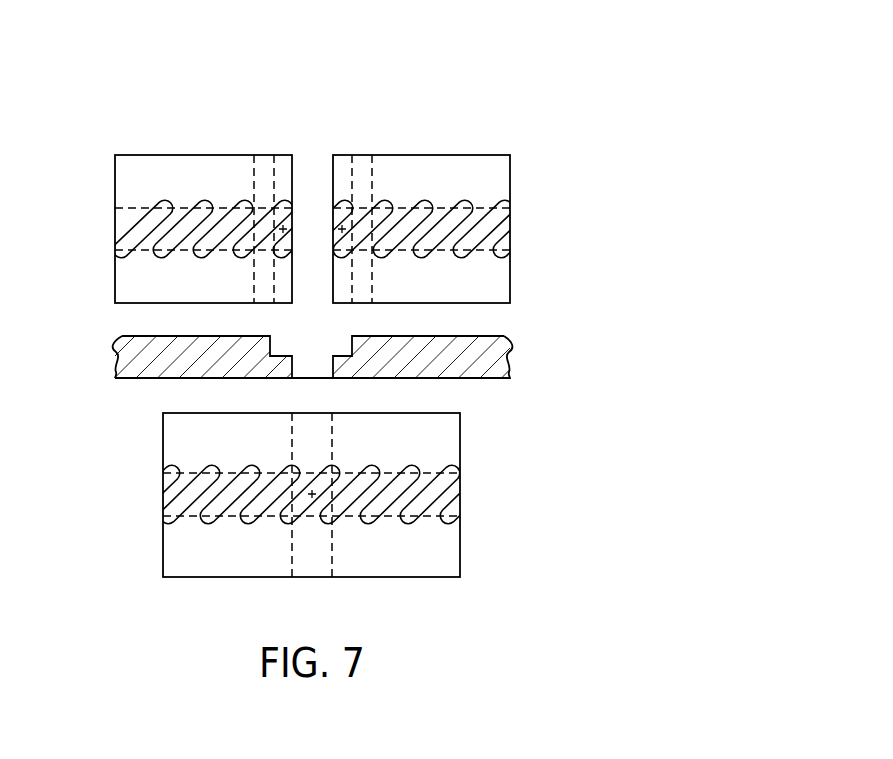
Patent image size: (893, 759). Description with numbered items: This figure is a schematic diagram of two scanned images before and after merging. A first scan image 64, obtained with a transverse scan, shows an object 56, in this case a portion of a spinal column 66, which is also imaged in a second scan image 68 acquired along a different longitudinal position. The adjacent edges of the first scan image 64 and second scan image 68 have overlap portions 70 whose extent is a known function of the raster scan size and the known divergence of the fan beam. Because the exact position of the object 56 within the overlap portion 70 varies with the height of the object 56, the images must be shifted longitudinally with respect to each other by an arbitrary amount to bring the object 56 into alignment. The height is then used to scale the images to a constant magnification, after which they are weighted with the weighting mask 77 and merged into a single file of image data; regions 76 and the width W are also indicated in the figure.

The object 56 is at (292, 233).
The first scan image 64 is at (455, 155).
The spinal column 66 is at (115, 229).
The second scan image 68 is at (115, 170).
The overlap portion 70 is at (372, 115).
The wall section 76 is at (352, 155).
The weighting mask 77 is at (505, 357).
The workpiece W is at (293, 357).